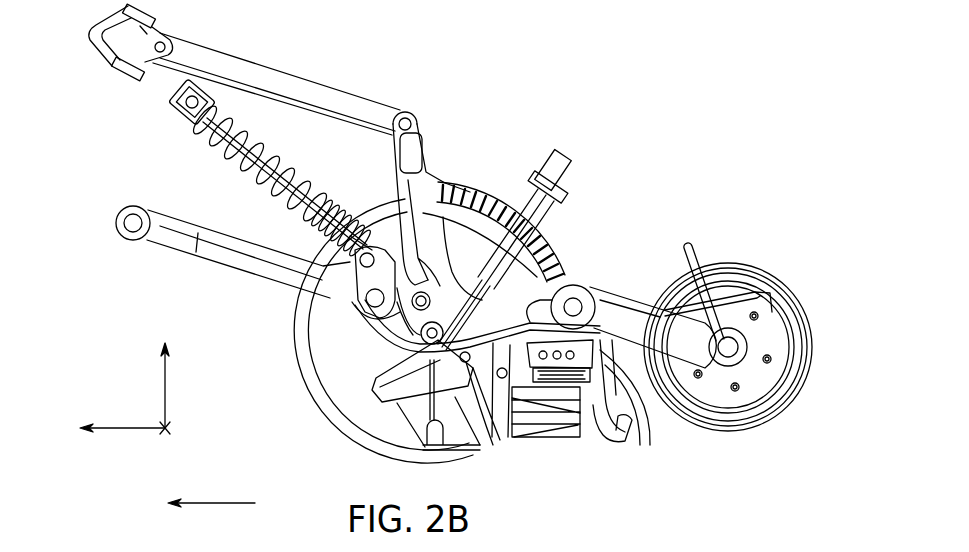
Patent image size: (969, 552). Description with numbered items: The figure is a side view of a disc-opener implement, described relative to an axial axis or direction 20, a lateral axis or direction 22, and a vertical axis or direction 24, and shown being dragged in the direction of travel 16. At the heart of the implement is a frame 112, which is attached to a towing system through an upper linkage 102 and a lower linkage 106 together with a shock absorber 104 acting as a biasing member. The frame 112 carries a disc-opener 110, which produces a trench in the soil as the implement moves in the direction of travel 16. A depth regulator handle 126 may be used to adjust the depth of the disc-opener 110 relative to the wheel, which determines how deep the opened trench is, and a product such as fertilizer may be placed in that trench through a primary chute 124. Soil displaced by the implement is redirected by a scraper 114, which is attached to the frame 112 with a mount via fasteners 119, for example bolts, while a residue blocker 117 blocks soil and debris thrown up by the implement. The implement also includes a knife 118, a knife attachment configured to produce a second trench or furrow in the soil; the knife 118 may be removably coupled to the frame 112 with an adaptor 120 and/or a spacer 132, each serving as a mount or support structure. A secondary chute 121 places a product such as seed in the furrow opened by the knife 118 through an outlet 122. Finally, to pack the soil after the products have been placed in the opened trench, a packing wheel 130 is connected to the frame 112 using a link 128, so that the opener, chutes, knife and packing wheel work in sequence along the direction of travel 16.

The direction of travel 16 is at (218, 506).
The axial axis or direction 20 is at (130, 427).
The lateral axis or direction 22 is at (167, 432).
The vertical axis or direction 24 is at (167, 390).
The linkage 102 is at (323, 97).
The shock absorber 104 is at (243, 170).
The linkage 106 is at (230, 253).
The disc-opener 110 is at (357, 402).
The frame 112 is at (413, 157).
The scraper 114 is at (485, 448).
The residue blocker 117 is at (407, 387).
The knife 118 is at (553, 410).
The fasteners 119 is at (468, 364).
The adaptor 120 is at (598, 283).
The secondary chute 121 is at (630, 380).
The outlet 122 is at (613, 442).
The primary chute 124 is at (558, 153).
The depth regulator handle 126 is at (566, 186).
The link 128 is at (675, 330).
The packing wheel 130 is at (790, 387).
The spacer 132 is at (612, 372).